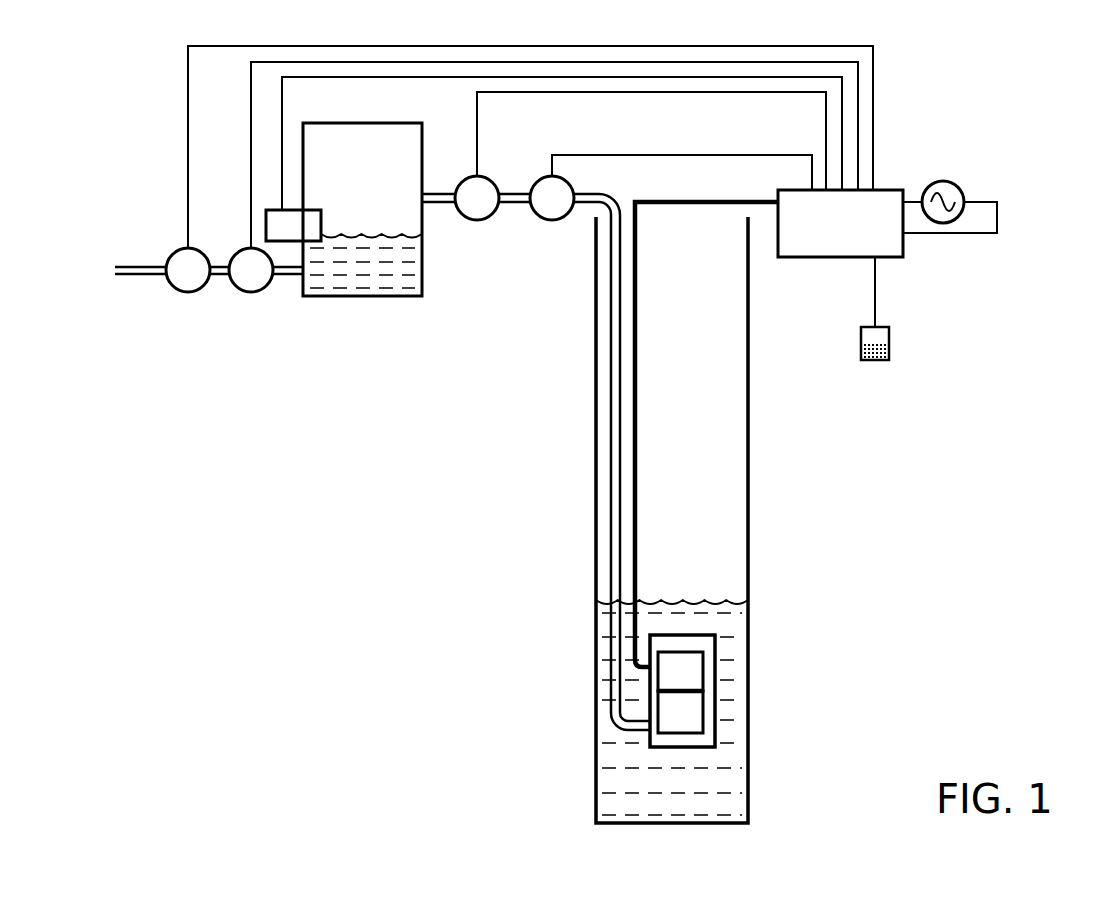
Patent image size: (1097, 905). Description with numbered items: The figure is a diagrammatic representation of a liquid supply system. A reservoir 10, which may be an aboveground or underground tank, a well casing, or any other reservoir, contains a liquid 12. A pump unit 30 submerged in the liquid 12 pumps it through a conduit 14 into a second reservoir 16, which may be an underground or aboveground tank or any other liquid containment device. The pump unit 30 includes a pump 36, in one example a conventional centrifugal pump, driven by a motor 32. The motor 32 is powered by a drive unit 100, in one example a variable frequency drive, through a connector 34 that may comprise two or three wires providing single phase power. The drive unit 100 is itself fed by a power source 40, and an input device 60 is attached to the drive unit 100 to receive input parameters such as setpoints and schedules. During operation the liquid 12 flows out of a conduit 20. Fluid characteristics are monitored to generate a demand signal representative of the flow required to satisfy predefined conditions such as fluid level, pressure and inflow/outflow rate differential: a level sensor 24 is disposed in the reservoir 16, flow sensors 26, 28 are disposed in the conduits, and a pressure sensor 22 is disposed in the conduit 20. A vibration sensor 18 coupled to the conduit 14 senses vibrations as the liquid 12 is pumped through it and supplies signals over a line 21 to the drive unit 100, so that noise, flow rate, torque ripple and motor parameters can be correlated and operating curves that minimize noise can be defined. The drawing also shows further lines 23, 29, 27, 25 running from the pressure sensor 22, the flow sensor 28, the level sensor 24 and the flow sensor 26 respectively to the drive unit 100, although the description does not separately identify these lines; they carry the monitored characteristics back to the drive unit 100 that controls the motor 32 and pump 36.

The reservoir 10 is at (608, 434).
The liquid 12 is at (713, 601).
The conduit 14 is at (632, 469).
The reservoir 16 is at (378, 297).
The vibration sensor 18 is at (386, 234).
The conduit 20 is at (128, 274).
The line 21 is at (688, 156).
The pressure sensor 22 is at (188, 293).
The signal line from pump 23 is at (188, 141).
The level sensor 24 is at (327, 199).
The signal line from flow meter F1 25 is at (612, 92).
The flow sensor 26 is at (479, 221).
The signal line from level sensor 27 is at (660, 78).
The flow sensor 28 is at (252, 292).
The signal line from flow meter F2 29 is at (251, 156).
The pump unit 30 is at (725, 690).
The motor 32 is at (703, 657).
The connector 34 is at (638, 513).
The pump 36 is at (703, 718).
The power source 40 is at (956, 186).
The input device 60 is at (875, 362).
The drive unit 100 is at (860, 258).